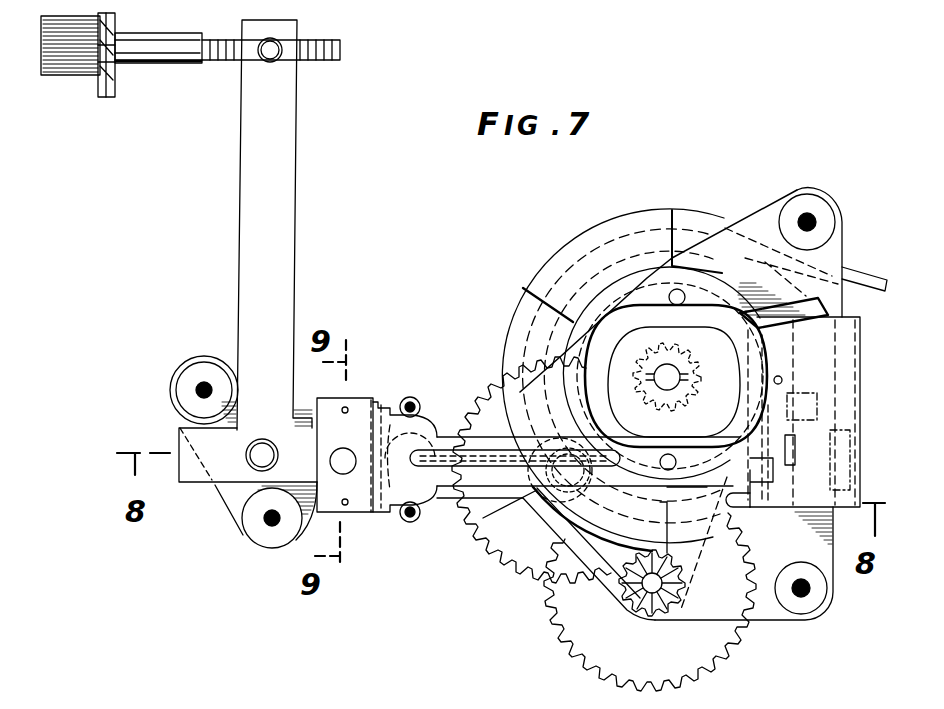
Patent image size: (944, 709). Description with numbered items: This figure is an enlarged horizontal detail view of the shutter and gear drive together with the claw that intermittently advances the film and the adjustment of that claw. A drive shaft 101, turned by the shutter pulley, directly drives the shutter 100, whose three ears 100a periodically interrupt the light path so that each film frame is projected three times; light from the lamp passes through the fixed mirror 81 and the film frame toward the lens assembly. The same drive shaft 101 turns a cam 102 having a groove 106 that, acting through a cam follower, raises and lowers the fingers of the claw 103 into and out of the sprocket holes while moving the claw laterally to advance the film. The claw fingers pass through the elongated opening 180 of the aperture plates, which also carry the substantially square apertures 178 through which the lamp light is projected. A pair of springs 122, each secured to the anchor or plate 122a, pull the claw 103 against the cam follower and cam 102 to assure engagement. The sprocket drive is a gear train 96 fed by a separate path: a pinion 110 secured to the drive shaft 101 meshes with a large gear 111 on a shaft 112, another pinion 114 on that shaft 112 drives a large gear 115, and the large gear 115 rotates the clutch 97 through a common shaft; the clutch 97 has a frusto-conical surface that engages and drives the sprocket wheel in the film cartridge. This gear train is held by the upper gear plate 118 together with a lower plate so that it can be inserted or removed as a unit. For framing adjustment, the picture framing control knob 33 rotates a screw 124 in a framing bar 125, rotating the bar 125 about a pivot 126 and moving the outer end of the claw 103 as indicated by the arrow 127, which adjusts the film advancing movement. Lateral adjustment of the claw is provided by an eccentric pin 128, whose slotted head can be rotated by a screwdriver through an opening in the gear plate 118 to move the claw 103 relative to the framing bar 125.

The picture framing control knob 33 is at (80, 62).
The screw 124 is at (338, 48).
The framing bar 125 is at (283, 236).
The upper gear plate 118 is at (180, 412).
The pivot 126 is at (248, 465).
The claw 103 is at (360, 515).
The eccentric pin 128 is at (345, 447).
The anchor or plate 122a is at (388, 402).
The springs 122 is at (412, 402).
The gear train 96 is at (495, 372).
The shaft 112 is at (535, 455).
The shutter 100 is at (545, 272).
The cam 102 is at (605, 305).
The large gear 111 is at (645, 222).
The groove 106 is at (687, 307).
The pinion 110 is at (645, 360).
The drive shaft 101 is at (679, 387).
The pinion 114 is at (530, 517).
The large gear 115 is at (575, 608).
The clutch 97 is at (680, 590).
The fixed mirror 81 is at (833, 342).
The ears 100a is at (797, 372).
The apertures 178 is at (813, 405).
The arrow 127 is at (767, 462).
The elongated opening 180 is at (830, 477).